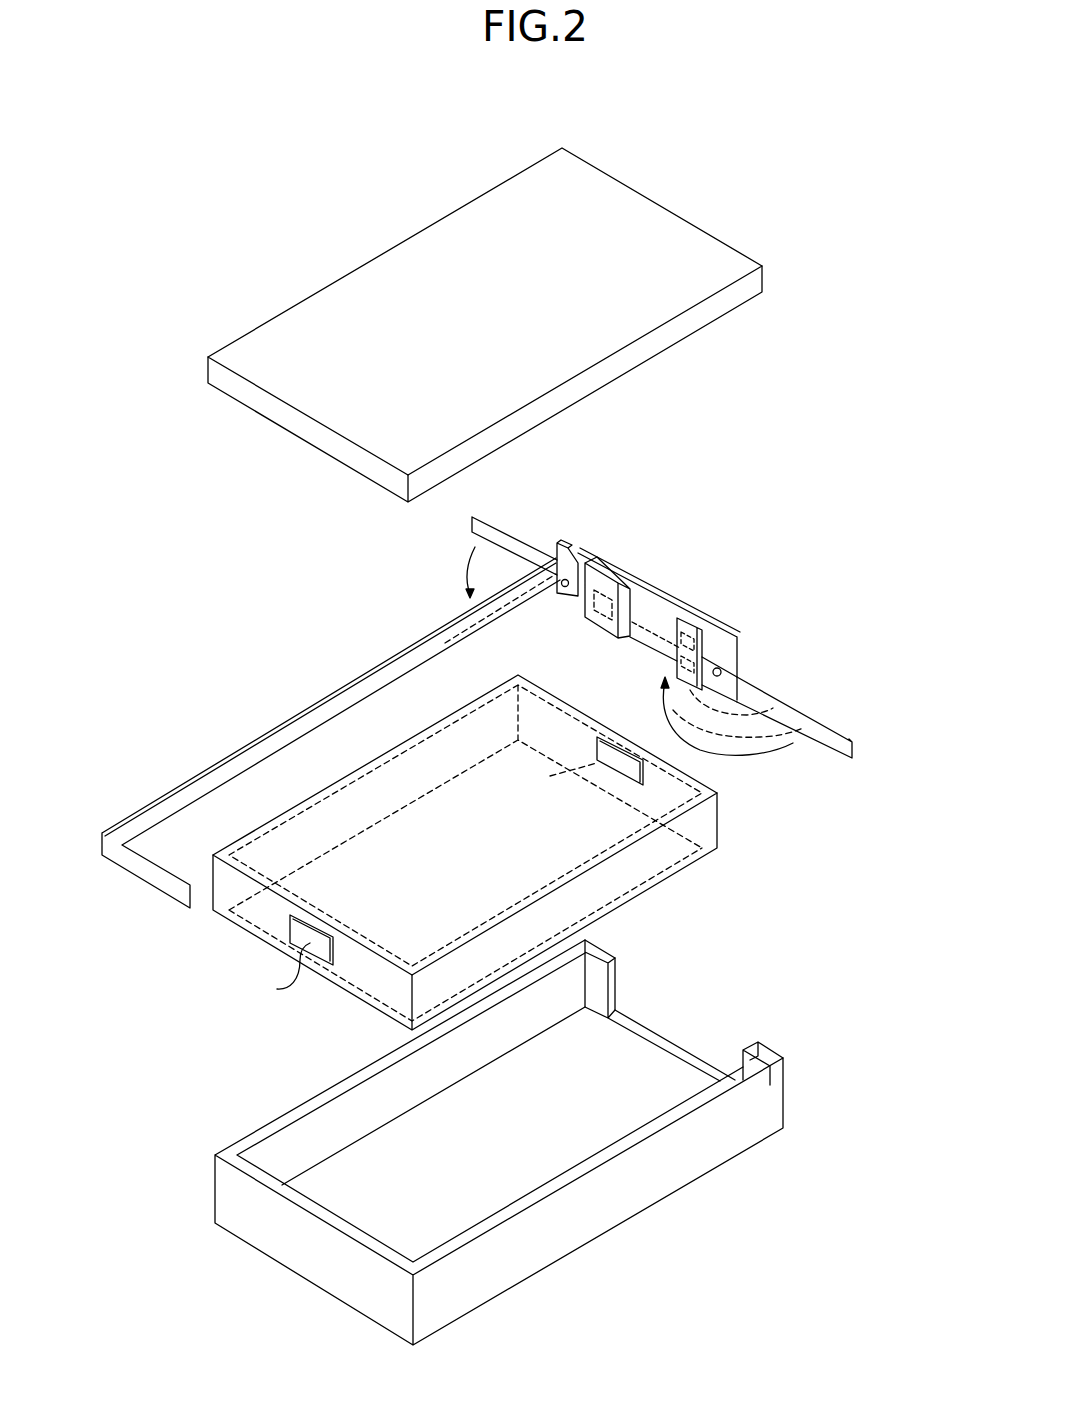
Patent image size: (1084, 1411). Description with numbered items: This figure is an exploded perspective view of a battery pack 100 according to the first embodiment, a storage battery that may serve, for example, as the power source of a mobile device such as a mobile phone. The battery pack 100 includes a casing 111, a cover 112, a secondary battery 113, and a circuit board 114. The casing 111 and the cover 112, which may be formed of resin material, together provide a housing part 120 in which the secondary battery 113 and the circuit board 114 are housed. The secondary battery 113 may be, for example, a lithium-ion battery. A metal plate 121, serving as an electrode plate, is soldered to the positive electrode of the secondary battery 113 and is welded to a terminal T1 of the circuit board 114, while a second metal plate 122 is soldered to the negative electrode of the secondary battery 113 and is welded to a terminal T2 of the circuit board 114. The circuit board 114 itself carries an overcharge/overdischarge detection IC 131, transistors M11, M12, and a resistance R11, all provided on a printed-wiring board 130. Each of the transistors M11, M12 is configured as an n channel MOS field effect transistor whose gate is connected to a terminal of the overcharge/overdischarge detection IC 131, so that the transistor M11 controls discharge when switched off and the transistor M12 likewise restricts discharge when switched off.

The battery pack 100 is at (242, 144).
The cover 112 is at (640, 202).
The secondary battery 113 is at (690, 860).
The casing 111 is at (494, 1142).
The housing part 120 is at (347, 1202).
The metal plate 121 is at (512, 575).
The metal plate 122 is at (800, 727).
The circuit board 114 is at (667, 585).
The printed-wiring board 130 is at (678, 607).
The overcharge/overdischarge detection IC 131 is at (610, 567).
The terminal T1 is at (568, 540).
The terminal T2 is at (737, 652).
The transistor M12 is at (700, 613).
The transistor M11 is at (712, 628).
The resistance R11 is at (787, 703).